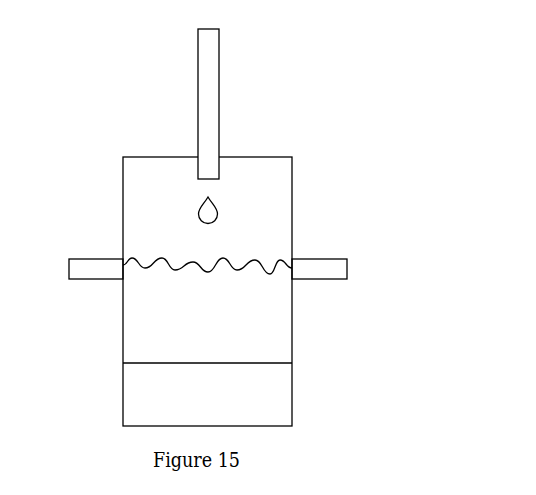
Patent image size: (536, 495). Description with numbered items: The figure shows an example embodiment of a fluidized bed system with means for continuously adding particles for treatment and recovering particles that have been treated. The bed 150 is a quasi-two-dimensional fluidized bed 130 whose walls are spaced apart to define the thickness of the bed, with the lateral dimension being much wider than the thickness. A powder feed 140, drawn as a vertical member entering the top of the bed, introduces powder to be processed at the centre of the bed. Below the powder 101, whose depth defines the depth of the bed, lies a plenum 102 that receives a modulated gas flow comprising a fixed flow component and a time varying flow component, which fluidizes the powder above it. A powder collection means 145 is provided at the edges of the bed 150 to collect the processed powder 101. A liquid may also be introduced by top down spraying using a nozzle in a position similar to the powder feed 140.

The powder 101 is at (228, 322).
The plenum 102 is at (228, 408).
The quasi-2D fluidized bed 130 is at (133, 157).
The powder feed 140 is at (198, 53).
The powder collection means 145 is at (95, 258).
The bed 150 is at (285, 138).